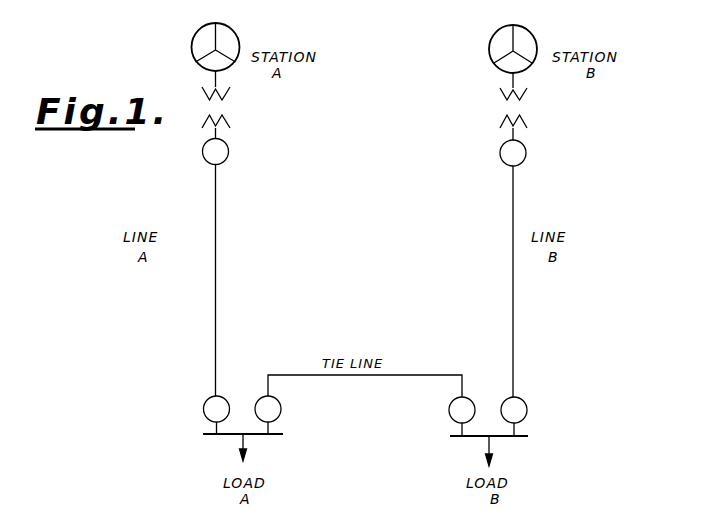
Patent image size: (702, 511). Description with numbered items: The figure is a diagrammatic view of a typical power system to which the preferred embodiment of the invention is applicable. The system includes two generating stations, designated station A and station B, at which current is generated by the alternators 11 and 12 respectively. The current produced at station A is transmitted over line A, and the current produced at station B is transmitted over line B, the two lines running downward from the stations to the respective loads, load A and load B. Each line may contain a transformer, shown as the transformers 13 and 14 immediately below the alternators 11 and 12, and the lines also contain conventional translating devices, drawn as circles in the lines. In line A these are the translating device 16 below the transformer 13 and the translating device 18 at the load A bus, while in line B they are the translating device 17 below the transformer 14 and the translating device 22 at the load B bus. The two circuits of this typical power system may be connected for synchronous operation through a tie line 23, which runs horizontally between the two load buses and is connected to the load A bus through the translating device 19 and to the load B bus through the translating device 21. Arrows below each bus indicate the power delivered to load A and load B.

The alternator 11 is at (234, 30).
The alternator 12 is at (533, 37).
The transformer 13 is at (233, 108).
The transformer 14 is at (525, 108).
The translating device 16 is at (227, 157).
The translating device 17 is at (520, 153).
The translating device 18 is at (207, 402).
The translating device 19 is at (275, 408).
The translating device 21 is at (450, 408).
The translating device 22 is at (528, 408).
The tie line 23 is at (363, 377).